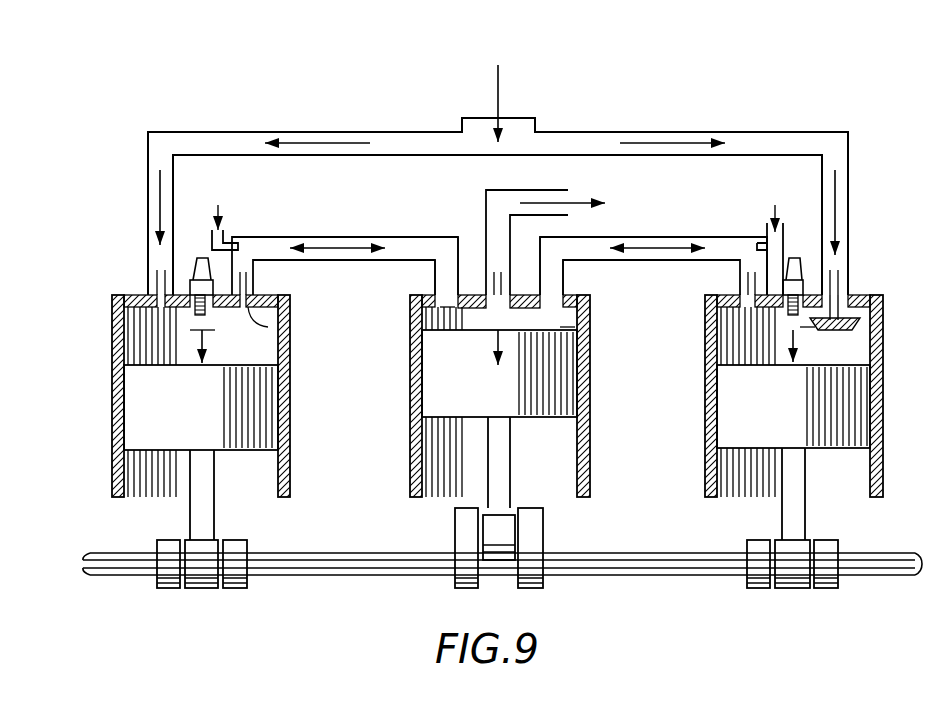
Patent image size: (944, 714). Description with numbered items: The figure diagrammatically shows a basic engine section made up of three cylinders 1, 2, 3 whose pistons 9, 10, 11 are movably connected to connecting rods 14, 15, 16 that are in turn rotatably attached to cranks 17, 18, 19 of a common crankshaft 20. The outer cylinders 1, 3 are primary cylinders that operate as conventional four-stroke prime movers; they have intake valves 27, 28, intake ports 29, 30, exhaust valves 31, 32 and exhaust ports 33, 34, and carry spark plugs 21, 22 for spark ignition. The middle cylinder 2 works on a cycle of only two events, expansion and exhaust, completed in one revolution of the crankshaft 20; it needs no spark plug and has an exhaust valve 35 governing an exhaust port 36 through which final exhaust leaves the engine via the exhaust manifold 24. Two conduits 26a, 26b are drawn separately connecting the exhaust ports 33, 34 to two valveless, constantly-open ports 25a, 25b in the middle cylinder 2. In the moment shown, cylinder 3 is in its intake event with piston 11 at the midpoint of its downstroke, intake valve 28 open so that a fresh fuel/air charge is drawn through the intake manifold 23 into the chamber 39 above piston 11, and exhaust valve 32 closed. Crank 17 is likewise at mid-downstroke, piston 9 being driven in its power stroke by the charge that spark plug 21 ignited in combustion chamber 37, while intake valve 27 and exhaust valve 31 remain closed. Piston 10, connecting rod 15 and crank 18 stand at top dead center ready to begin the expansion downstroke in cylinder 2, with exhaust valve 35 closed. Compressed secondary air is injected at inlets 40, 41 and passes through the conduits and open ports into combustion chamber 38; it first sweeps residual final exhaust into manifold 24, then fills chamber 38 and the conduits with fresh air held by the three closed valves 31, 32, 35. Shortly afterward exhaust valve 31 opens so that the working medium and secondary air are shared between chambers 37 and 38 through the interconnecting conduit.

The primary cylinder 1 is at (112, 380).
The middle cylinder 2 is at (410, 332).
The primary cylinder 3 is at (883, 430).
The piston 9 is at (140, 430).
The piston 10 is at (440, 385).
The piston 11 is at (735, 432).
The connecting rod 14 is at (215, 482).
The connecting rod 15 is at (512, 450).
The connecting rod 16 is at (805, 480).
The crank 17 is at (165, 540).
The crank 18 is at (455, 520).
The crank 19 is at (752, 540).
The crankshaft 20 is at (278, 580).
The spark plug 21 is at (202, 262).
The spark plug 22 is at (795, 262).
The intake manifold 23 is at (592, 132).
The exhaust manifold 24 is at (490, 190).
The valveless port 25a is at (445, 300).
The valveless port 25b is at (548, 300).
The conduit 26a is at (345, 237).
The conduit 26b is at (663, 262).
The intake valve 27 is at (152, 310).
The intake valve 28 is at (850, 328).
The intake port 29 is at (150, 292).
The intake port 30 is at (848, 295).
The exhaust valve 31 is at (268, 327).
The exhaust valve 32 is at (758, 313).
The exhaust port 33 is at (250, 283).
The exhaust port 34 is at (742, 287).
The exhaust valve 35 is at (460, 310).
The exhaust port 36 is at (505, 290).
The combustion chamber 37 is at (265, 350).
The combustion chamber 38 is at (578, 345).
The combustion chamber 39 is at (850, 350).
The secondary air inlet 40 is at (225, 232).
The secondary air inlet 41 is at (765, 232).